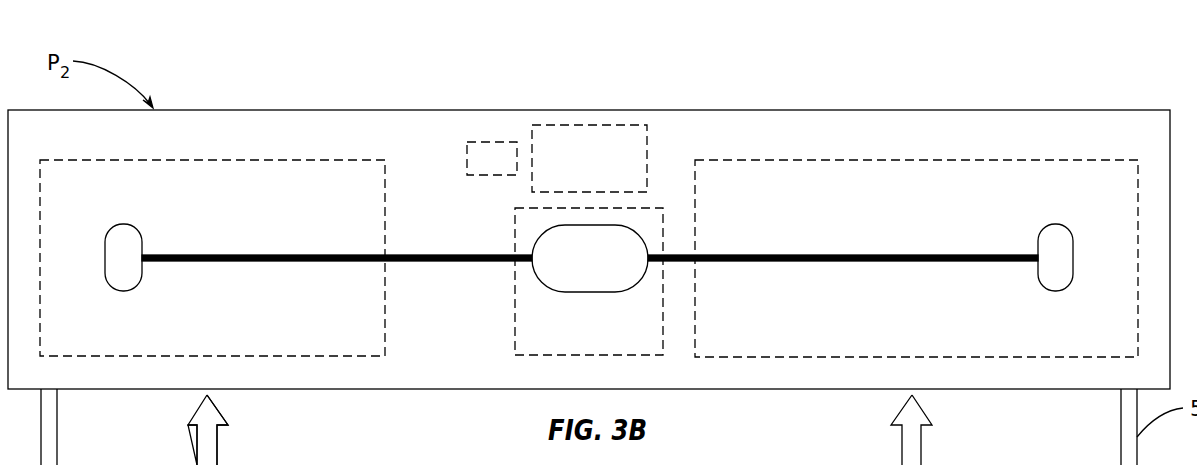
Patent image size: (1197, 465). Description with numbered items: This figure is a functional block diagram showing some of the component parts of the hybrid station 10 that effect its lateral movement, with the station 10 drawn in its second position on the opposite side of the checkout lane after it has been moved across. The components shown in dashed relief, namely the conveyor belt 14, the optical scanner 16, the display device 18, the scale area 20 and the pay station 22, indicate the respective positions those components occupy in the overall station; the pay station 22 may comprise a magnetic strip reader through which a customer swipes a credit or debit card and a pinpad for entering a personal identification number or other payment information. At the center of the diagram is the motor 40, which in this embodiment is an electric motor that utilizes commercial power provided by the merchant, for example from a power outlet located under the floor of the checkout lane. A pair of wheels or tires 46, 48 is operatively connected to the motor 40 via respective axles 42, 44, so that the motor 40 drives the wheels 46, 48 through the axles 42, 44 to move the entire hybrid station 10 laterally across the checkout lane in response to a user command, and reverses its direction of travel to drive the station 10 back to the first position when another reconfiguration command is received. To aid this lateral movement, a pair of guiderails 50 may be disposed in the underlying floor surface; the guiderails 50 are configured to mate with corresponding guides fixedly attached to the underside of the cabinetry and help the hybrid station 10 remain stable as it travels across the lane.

The hybrid station 10 is at (1088, 92).
The conveyor belt 14 is at (922, 343).
The optical scanner 16 is at (602, 347).
The display device 18 is at (600, 169).
The scale area 20 is at (218, 344).
The pay station 22 is at (503, 169).
The motor 40 is at (602, 269).
The axle 42 is at (479, 261).
The axle 44 is at (836, 261).
The wheel 46 is at (120, 244).
The wheel 48 is at (1058, 240).
The guiderails 50 is at (58, 452).